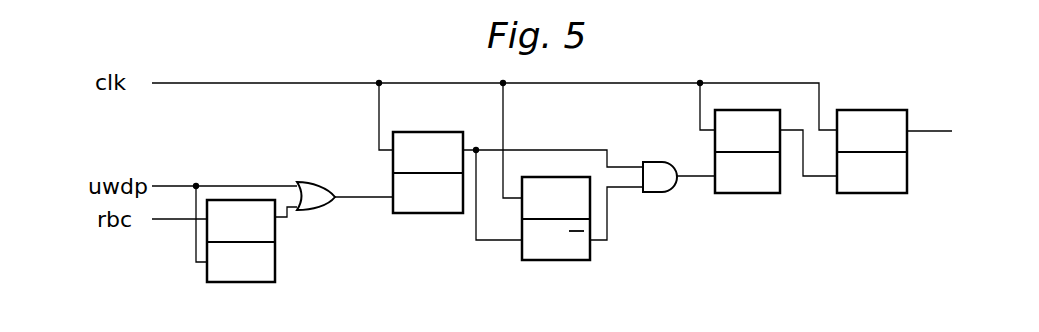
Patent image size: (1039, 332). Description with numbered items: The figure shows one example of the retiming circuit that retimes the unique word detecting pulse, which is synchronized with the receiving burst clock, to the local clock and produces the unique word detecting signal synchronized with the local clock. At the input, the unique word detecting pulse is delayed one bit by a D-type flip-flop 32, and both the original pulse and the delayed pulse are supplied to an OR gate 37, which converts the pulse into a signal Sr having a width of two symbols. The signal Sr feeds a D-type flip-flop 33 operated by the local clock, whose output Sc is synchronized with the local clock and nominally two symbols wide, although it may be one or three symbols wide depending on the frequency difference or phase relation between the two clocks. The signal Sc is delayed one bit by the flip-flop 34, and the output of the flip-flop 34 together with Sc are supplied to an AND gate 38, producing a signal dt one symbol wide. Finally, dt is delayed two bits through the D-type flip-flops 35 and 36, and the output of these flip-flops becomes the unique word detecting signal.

The D-type flip-flop 32 is at (236, 200).
The D-type flip-flop 33 is at (428, 132).
The flip-flop 34 is at (548, 177).
The D-type flip-flop 35 is at (757, 110).
The D-type flip-flop 36 is at (875, 110).
The OR gate 37 is at (318, 183).
The AND gate 38 is at (655, 162).